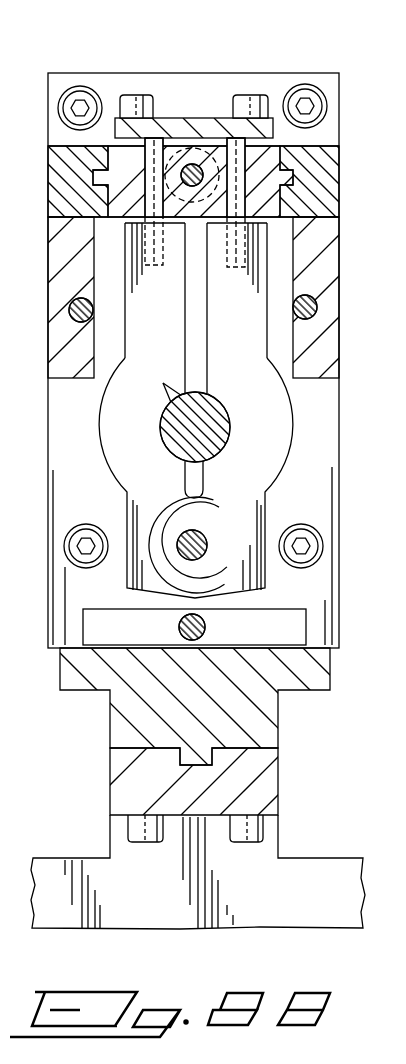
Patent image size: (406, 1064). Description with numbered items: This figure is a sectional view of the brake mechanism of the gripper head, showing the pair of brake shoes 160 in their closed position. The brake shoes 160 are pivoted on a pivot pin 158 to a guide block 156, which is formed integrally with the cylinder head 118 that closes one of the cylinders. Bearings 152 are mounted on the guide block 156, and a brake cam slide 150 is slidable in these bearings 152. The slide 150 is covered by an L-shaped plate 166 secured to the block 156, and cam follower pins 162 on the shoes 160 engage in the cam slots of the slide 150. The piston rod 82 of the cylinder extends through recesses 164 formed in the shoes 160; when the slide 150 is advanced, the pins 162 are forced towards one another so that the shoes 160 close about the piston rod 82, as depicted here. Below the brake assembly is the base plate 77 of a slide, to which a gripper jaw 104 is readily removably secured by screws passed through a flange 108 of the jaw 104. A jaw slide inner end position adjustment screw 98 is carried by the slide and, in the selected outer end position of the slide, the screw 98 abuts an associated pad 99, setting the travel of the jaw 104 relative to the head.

The base plate 77 is at (310, 677).
The piston rod 82 is at (215, 433).
The jaw slide inner end position adjustment screw 98 is at (205, 627).
The pad 99 is at (115, 623).
The gripper jaw 104 is at (313, 873).
The flange 108 is at (122, 793).
The cylinder head 118 is at (317, 493).
The brake cam slide 150 is at (263, 148).
The bearings 152 is at (320, 182).
The guide block 156 is at (57, 90).
The pivot pin 158 is at (198, 547).
The brake shoes 160 is at (247, 337).
The cam follower pins 162 is at (232, 193).
The recesses 164 is at (161, 379).
The L-shaped plate 166 is at (184, 127).